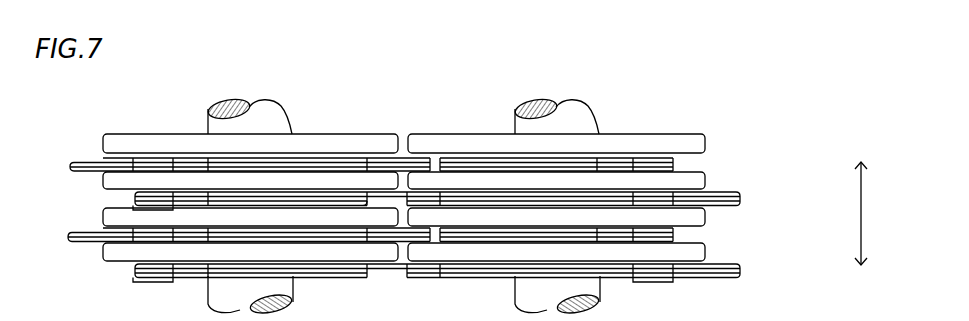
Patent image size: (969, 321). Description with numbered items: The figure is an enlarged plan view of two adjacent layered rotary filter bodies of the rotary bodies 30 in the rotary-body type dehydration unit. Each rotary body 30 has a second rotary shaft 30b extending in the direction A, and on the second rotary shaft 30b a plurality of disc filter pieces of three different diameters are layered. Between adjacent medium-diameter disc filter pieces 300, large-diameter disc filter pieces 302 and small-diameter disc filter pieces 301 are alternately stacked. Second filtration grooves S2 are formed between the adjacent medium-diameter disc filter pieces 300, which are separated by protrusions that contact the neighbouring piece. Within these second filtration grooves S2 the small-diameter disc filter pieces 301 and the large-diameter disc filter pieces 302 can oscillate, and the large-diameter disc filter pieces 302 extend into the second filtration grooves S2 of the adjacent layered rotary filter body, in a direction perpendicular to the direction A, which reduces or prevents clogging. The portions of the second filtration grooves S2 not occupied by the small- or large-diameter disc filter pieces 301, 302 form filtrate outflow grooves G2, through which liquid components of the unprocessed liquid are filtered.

The medium-diameter disc filter piece 300 is at (705, 144).
The small-diameter disc filter piece 301 is at (673, 163).
The large-diameter disc filter piece 302 is at (740, 200).
The second rotary shaft 30b is at (292, 120).
The rotary body 30 is at (451, 203).
The filtrate outflow groove G2 is at (100, 157).
The second filtration groove S2 is at (103, 200).
The direction A is at (869, 213).